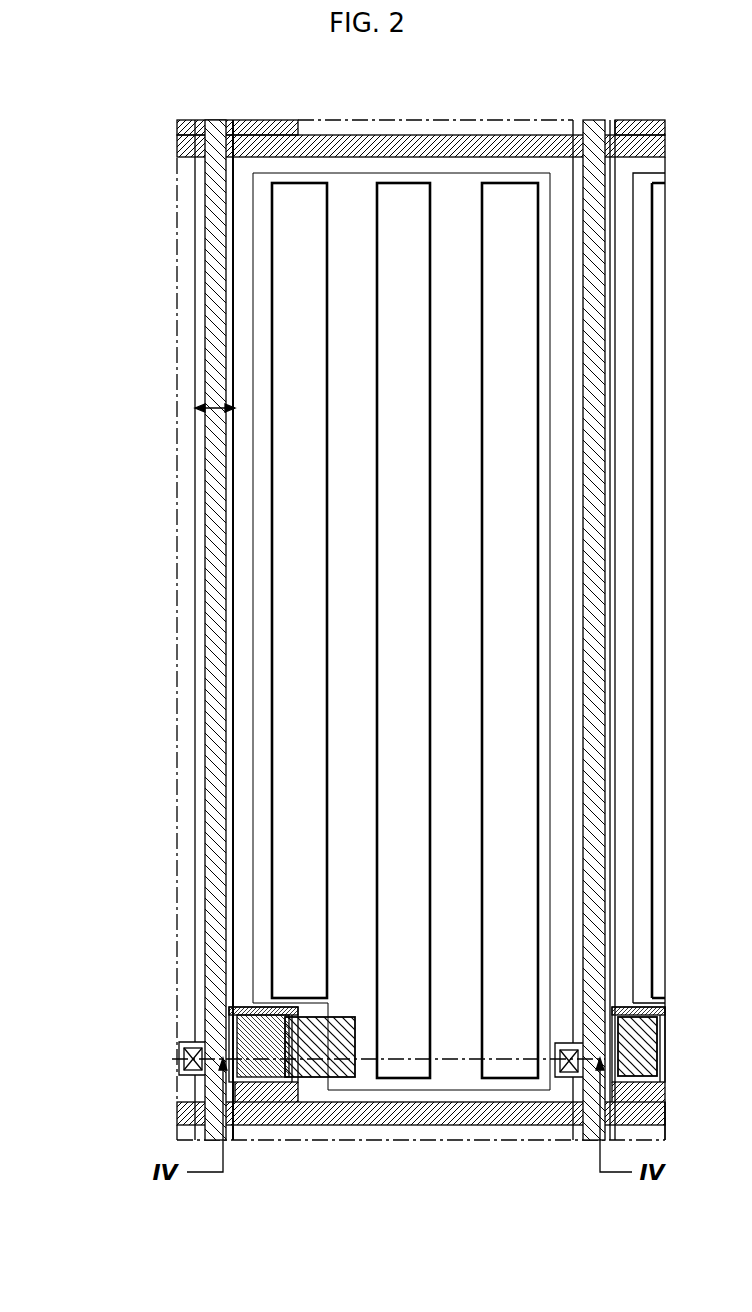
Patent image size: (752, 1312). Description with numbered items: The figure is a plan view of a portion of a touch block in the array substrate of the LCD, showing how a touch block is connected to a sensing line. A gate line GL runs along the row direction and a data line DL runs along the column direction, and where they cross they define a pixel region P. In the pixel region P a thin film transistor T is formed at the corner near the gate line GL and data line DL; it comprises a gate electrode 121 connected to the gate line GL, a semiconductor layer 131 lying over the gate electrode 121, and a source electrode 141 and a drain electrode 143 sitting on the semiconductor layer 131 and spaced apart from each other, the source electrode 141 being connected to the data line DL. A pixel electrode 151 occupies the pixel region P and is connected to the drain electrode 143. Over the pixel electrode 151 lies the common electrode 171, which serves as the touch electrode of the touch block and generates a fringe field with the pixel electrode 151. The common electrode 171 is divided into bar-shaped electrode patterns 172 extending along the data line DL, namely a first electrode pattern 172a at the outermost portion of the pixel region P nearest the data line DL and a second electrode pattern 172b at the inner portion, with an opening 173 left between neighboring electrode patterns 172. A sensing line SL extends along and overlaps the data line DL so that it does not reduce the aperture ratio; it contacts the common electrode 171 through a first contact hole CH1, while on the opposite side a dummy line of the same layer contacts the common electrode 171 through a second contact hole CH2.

The gate line GL is at (182, 1108).
The data line DL is at (217, 445).
The sensing line SL is at (203, 400).
The pixel region P is at (583, 95).
The common electrode 171 is at (262, 290).
The pixel electrode 151 is at (255, 338).
The electrode pattern 172 is at (578, 280).
The first electrode pattern 172a is at (651, 306).
The second electrode pattern 172b is at (430, 306).
The opening 173 is at (513, 422).
The gate electrode 121 is at (262, 994).
The semiconductor layer 131 is at (272, 1066).
The source electrode 141 is at (230, 1018).
The drain electrode 143 is at (300, 1075).
The first contact hole CH1 is at (557, 1052).
The second contact hole CH2 is at (182, 1062).
The thin film transistor T is at (223, 1072).